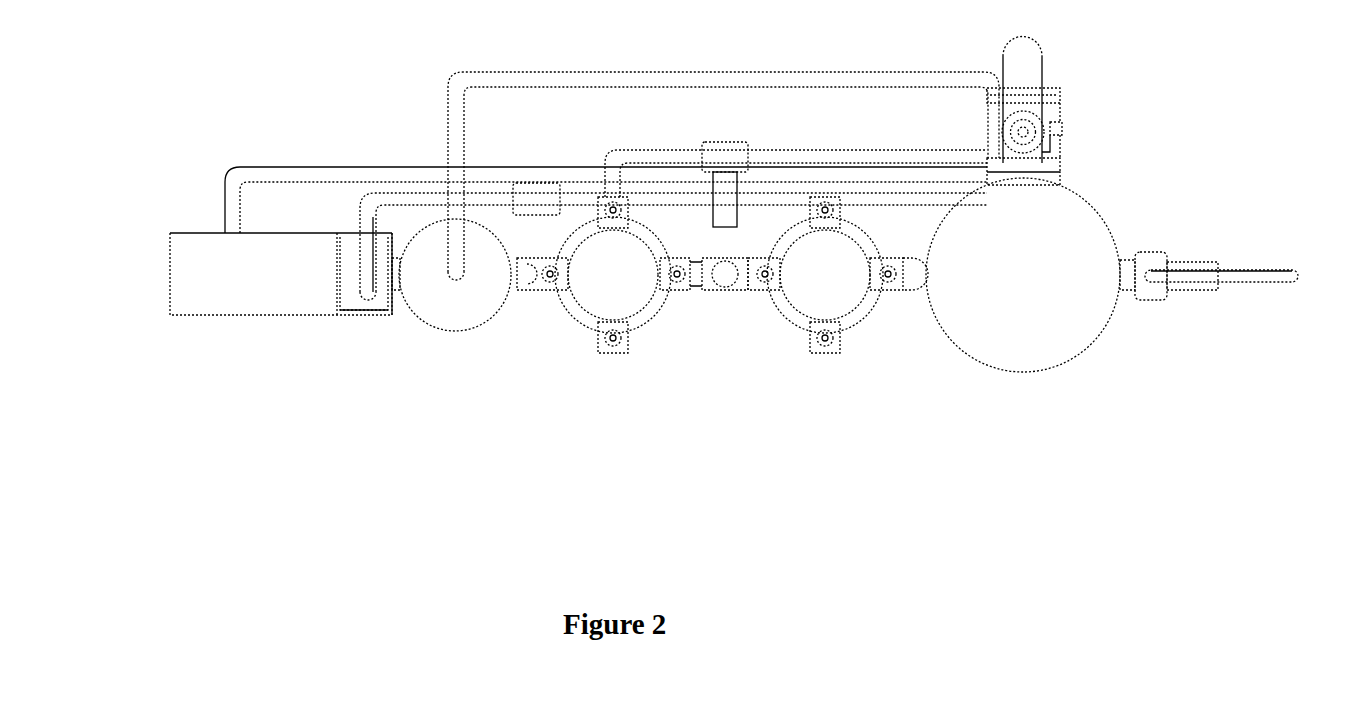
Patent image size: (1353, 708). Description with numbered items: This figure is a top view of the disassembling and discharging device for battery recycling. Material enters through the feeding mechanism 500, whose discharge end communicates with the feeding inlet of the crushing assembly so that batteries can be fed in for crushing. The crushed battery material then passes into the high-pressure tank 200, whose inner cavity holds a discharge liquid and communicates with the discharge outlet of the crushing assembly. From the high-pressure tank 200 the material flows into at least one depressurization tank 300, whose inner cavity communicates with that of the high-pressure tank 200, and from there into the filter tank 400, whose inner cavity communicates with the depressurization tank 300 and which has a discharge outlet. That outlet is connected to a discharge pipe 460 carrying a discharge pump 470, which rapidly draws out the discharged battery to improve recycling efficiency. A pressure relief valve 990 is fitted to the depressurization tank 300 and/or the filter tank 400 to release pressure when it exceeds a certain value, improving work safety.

The feeding mechanism 500 is at (249, 286).
The high-pressure tank 200 is at (457, 290).
The depressurization tank 300 is at (599, 296).
The filter tank 400 is at (986, 328).
The discharge pipe 460 is at (1214, 291).
The discharge pump 470 is at (1155, 294).
The pressure relief valve 990 is at (1051, 121).